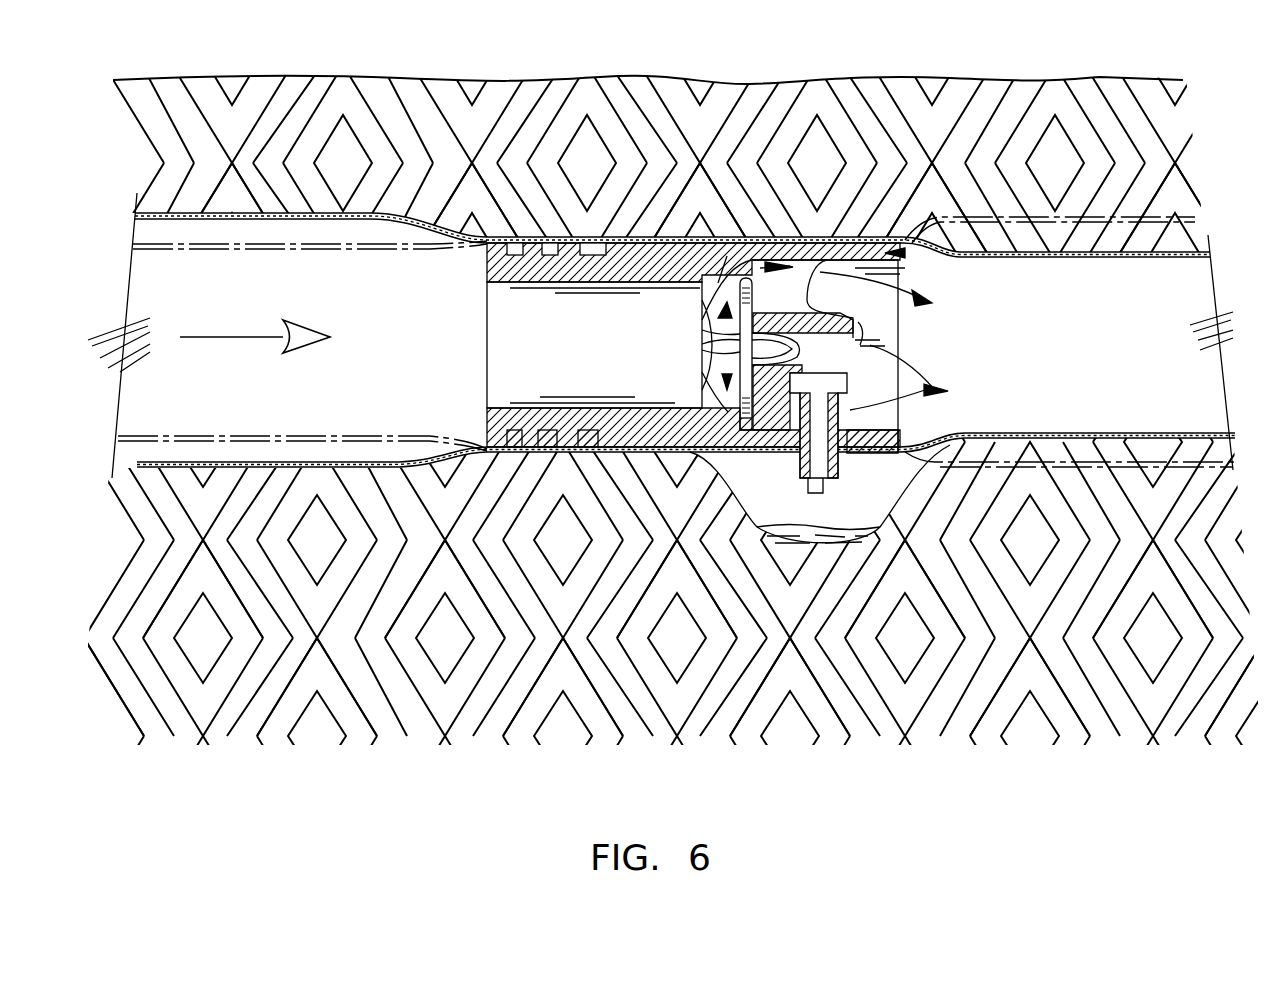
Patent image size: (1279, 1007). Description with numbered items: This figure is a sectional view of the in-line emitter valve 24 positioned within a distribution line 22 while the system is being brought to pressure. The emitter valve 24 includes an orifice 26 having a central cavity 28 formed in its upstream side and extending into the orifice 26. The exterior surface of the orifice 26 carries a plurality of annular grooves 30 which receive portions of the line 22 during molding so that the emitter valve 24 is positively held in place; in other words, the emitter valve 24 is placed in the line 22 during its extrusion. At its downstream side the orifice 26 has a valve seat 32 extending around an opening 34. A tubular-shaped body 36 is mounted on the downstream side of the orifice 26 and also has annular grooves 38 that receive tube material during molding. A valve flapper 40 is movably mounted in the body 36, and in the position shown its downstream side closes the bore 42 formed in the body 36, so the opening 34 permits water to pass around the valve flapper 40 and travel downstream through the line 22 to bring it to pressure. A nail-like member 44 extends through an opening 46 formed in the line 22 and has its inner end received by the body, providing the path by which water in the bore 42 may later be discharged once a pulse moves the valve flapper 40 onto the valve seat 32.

The distribution line 22 is at (1180, 250).
The emitter valve 24 is at (477, 273).
The orifice 26 is at (477, 423).
The central cavity 28 is at (487, 358).
The annular grooves 30 is at (513, 262).
The valve seat 32 is at (720, 332).
The opening 34 is at (745, 338).
The tubular-shaped body 36 is at (918, 257).
The annular grooves 38 is at (823, 258).
The valve flapper 40 is at (853, 370).
The bore 42 is at (868, 343).
The nail-like member 44 is at (848, 410).
The opening 46 is at (798, 468).